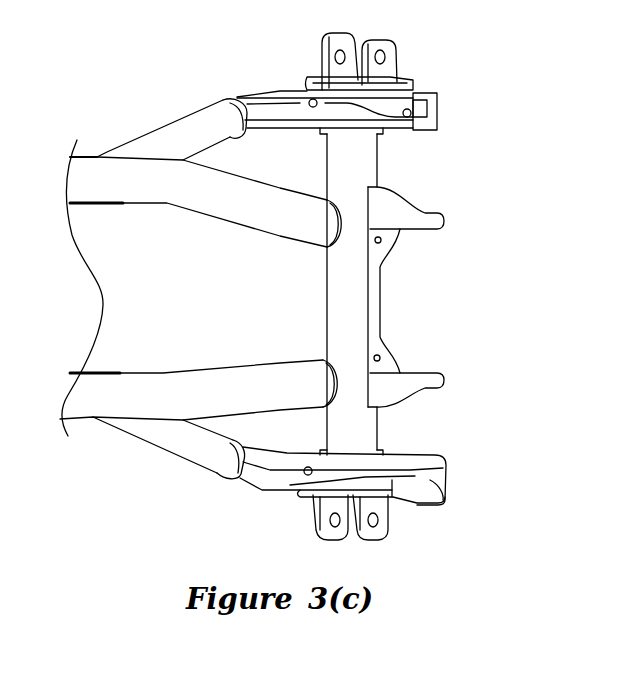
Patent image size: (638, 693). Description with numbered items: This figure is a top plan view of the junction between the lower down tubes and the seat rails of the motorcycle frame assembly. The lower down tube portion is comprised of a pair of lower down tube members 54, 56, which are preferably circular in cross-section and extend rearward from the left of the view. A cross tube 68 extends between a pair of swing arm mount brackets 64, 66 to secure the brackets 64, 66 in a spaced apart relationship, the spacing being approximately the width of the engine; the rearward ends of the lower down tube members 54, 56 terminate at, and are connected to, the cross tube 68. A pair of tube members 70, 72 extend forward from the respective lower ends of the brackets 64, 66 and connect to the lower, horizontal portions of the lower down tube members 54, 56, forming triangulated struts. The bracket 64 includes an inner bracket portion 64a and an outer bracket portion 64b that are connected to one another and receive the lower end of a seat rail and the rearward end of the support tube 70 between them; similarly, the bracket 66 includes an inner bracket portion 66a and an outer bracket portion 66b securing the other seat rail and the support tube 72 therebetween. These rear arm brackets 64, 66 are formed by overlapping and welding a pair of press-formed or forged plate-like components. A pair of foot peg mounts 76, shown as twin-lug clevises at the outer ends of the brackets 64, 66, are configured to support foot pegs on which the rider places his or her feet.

The lower down tube member 54 is at (183, 374).
The lower down tube member 56 is at (143, 190).
The swing arm mount bracket 64 is at (455, 469).
The inner bracket portion 64a is at (405, 454).
The outer bracket portion 64b is at (413, 501).
The swing arm mount bracket 66 is at (452, 105).
The inner bracket portion 66a is at (390, 120).
The outer bracket portion 66b is at (422, 90).
The cross tube 68 is at (372, 162).
The tube member 70 is at (173, 441).
The tube member 72 is at (178, 133).
The foot peg mount 76 is at (370, 42).